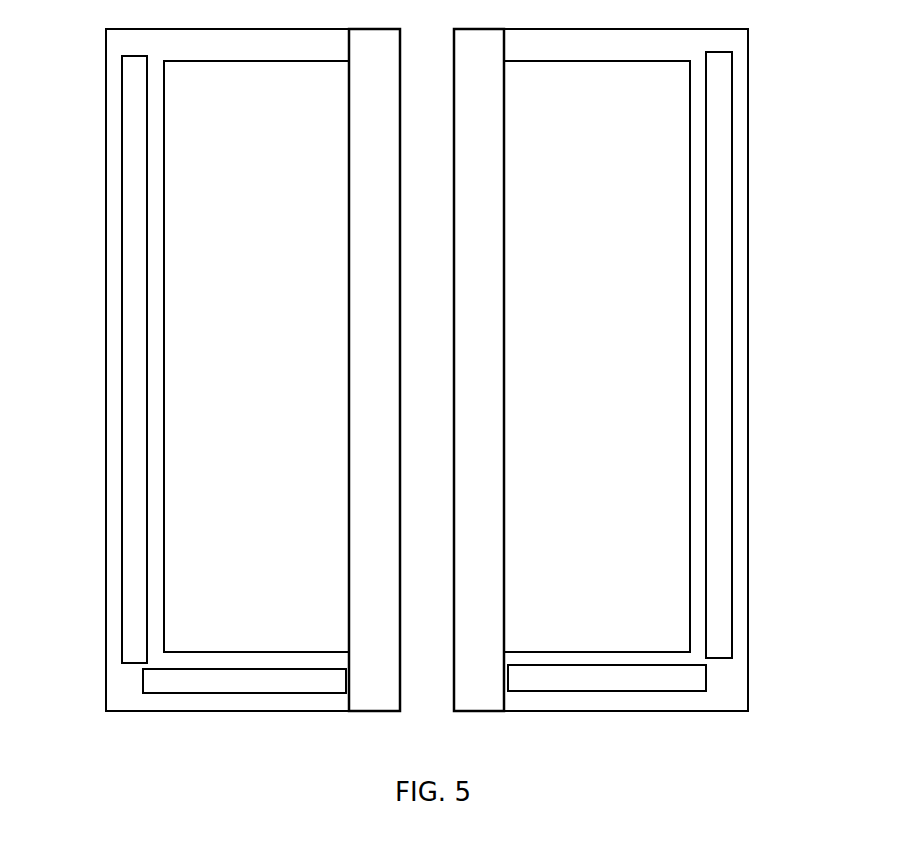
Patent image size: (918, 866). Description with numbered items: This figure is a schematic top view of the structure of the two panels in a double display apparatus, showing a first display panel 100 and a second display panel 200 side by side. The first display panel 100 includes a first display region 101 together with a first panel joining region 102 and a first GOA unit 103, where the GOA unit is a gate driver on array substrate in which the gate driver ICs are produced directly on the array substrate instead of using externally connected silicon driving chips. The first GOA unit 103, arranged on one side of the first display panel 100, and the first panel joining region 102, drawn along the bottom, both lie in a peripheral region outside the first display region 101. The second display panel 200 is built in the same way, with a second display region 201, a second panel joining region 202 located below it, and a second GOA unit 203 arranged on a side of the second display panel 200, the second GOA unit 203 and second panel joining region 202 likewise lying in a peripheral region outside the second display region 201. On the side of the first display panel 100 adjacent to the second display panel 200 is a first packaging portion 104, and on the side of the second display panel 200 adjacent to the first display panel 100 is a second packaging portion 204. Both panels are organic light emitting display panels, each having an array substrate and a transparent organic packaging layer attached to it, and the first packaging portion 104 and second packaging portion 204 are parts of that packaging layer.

The first display panel 100 is at (761, 71).
The first display region 101 is at (597, 356).
The first panel joining region 102 is at (607, 678).
The first GOA unit 103 is at (723, 355).
The first packaging portion 104 is at (479, 370).
The second display panel 200 is at (95, 62).
The second display region 201 is at (256, 356).
The second panel joining region 202 is at (244, 681).
The second GOA unit 203 is at (139, 359).
The second packaging portion 204 is at (374, 370).